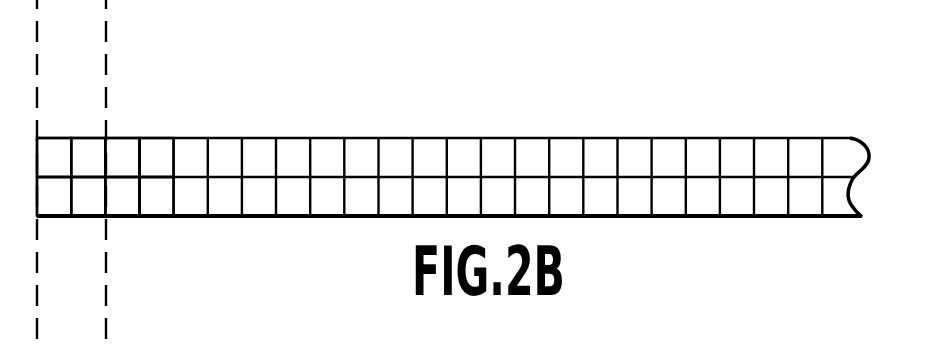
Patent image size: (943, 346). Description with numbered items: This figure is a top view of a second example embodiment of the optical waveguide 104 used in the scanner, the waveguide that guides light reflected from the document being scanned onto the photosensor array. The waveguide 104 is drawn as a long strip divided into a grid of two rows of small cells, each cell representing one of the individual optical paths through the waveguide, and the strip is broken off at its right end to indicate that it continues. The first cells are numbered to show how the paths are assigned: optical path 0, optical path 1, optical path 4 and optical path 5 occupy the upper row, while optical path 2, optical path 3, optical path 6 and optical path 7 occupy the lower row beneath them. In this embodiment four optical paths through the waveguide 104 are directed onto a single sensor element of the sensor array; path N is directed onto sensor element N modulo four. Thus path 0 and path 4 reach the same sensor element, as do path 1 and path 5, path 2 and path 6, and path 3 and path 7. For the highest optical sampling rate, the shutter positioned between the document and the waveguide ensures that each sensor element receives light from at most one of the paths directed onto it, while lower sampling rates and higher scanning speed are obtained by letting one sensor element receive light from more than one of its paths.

The optical waveguide 104 is at (765, 138).
The optical path 0 is at (54, 159).
The optical path 1 is at (88, 159).
The optical path 2 is at (54, 197).
The optical path 3 is at (88, 197).
The optical path 4 is at (122, 159).
The optical path 5 is at (157, 159).
The optical path 6 is at (122, 197).
The optical path 7 is at (157, 197).